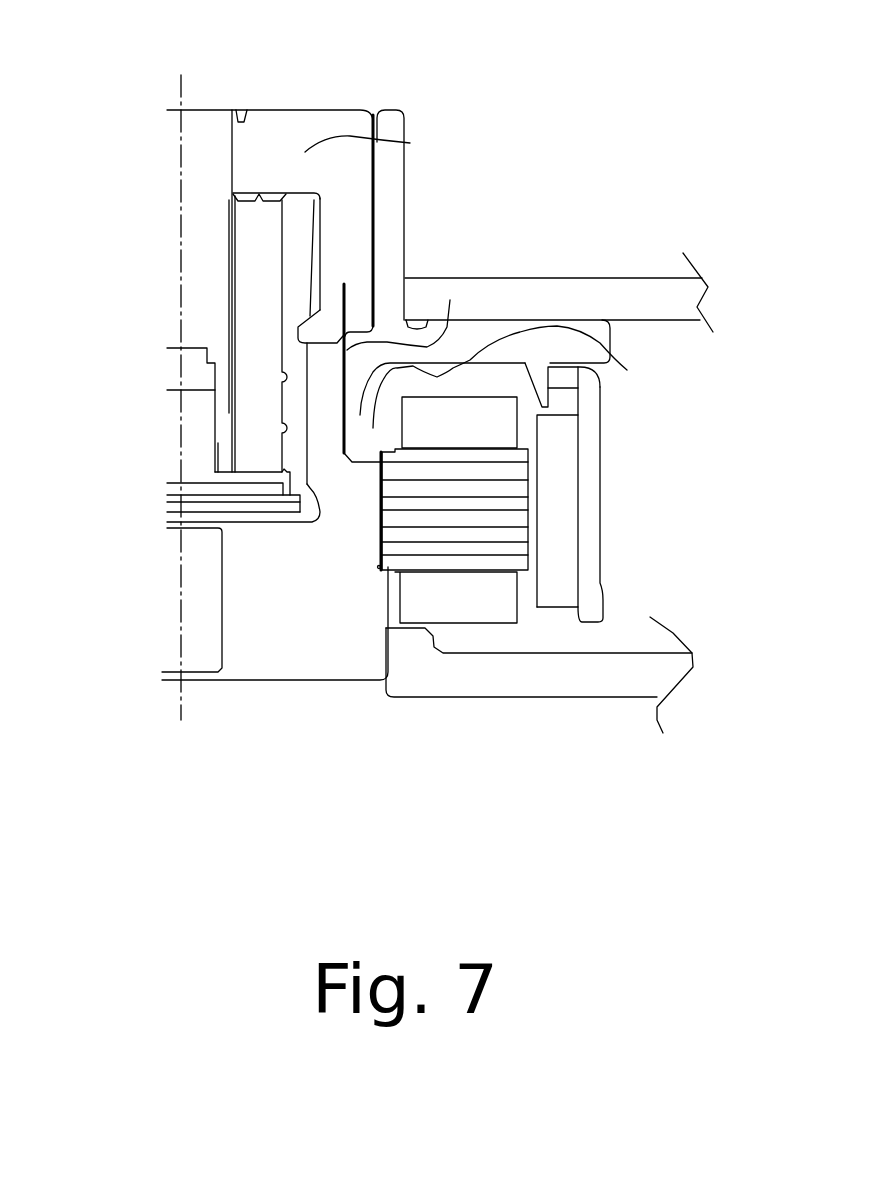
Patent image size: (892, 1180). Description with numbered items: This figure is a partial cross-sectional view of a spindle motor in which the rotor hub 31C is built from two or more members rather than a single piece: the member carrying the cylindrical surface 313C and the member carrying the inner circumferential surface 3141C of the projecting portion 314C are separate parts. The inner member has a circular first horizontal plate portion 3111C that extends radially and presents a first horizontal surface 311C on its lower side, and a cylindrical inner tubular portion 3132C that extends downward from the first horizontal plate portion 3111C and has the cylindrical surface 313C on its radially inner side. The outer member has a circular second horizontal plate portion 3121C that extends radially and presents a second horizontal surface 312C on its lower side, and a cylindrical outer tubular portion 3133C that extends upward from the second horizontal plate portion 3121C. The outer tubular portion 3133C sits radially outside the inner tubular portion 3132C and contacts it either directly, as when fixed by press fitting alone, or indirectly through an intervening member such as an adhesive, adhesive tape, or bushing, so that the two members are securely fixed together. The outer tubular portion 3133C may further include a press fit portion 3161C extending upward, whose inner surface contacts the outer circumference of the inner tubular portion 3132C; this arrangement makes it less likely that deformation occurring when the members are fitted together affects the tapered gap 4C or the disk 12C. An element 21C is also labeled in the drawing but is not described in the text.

The tapered gap 4C is at (320, 283).
The shaft holding member 21C is at (297, 228).
The disk 12C is at (625, 293).
The rotor hub 31C is at (527, 317).
The first horizontal surface 311C is at (263, 190).
The first horizontal plate portion 3111C is at (410, 143).
The cylindrical surface 313C is at (350, 262).
The inner tubular portion 3132C is at (323, 246).
The press fit portion 3161C is at (388, 237).
The outer tubular portion 3133C is at (397, 270).
The projecting portion 314C is at (473, 357).
The inner circumferential surface 3141C is at (450, 305).
The second horizontal surface 312C is at (627, 370).
The second horizontal plate portion 3121C is at (558, 347).